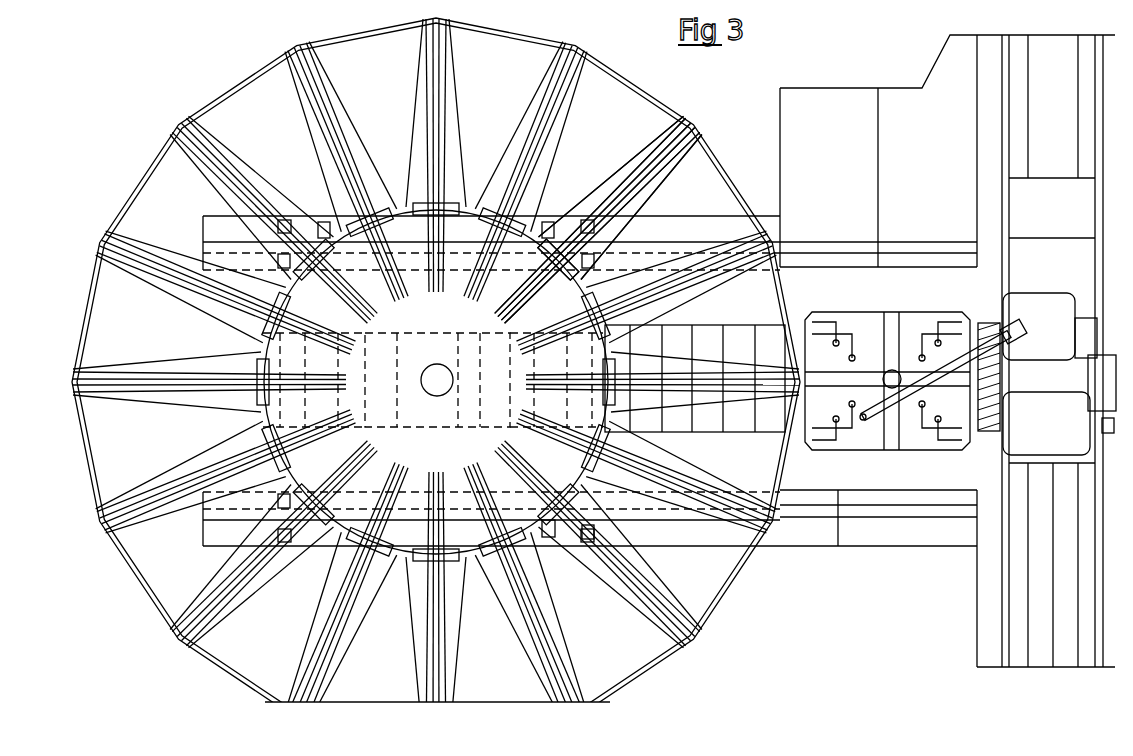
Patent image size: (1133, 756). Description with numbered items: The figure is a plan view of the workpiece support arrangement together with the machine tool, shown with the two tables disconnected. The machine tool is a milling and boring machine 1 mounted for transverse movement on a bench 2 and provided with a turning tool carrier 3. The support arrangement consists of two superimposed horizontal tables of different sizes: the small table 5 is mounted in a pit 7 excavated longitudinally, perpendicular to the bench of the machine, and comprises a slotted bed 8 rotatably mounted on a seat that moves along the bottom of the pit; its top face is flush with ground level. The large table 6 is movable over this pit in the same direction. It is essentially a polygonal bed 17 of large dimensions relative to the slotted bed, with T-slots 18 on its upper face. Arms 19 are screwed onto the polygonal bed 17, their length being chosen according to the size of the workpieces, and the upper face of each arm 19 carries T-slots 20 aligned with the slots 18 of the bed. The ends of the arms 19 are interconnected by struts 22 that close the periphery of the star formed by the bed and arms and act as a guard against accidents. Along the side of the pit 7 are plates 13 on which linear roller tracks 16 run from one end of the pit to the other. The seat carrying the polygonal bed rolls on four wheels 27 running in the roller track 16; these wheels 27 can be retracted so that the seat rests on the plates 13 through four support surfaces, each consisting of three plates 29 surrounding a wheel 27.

The milling and boring machine 1 is at (1106, 432).
The bench 2 is at (1042, 645).
The turning tool carrier 3 is at (977, 420).
The small table 5 is at (917, 288).
The large table 6 is at (436, 382).
The pit 7 is at (943, 403).
The slotted bed 8 is at (890, 437).
The plates 13 is at (215, 232).
The linear roller tracks 16 is at (820, 548).
The polygonal bed 17 is at (439, 347).
The T-slots 18 is at (433, 397).
The arms 19 is at (630, 239).
The T-slots 20 is at (662, 396).
The struts 22 is at (436, 382).
The wheels 27 is at (330, 247).
The plates 29 is at (572, 236).